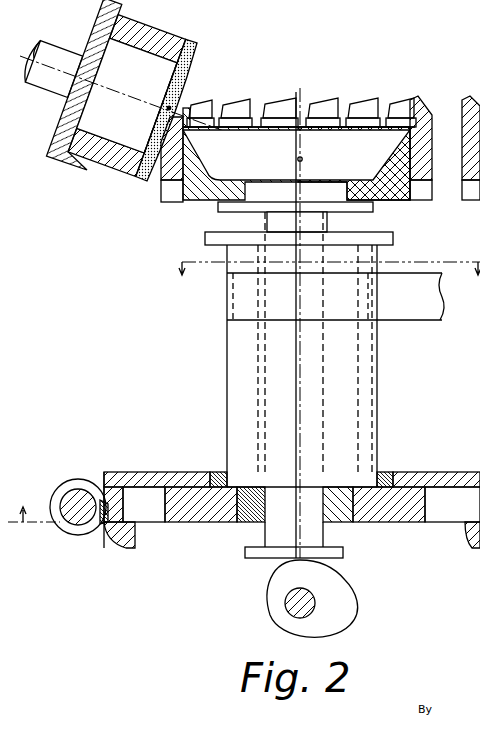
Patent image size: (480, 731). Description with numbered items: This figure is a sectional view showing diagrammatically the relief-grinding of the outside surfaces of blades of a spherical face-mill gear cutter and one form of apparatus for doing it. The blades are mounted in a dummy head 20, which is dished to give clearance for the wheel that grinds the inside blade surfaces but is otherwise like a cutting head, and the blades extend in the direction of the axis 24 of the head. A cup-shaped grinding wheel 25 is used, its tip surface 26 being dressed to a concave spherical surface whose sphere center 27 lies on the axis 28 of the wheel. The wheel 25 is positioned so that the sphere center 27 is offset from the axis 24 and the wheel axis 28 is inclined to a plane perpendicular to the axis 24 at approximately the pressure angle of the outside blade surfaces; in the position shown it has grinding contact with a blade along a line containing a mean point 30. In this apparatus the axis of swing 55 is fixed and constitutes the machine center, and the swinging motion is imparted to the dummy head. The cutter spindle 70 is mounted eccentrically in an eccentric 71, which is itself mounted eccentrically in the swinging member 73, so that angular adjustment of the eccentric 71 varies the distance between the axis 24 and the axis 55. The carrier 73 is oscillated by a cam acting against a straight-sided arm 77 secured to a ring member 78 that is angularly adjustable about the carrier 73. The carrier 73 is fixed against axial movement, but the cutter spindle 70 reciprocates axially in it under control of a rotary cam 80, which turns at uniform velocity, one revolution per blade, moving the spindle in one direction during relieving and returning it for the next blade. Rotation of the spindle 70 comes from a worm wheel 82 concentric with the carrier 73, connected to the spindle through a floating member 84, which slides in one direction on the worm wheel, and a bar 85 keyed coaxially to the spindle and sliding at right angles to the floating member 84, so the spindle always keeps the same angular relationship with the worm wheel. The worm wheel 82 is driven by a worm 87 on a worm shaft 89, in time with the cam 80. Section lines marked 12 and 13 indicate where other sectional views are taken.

The section line 12- 12 is at (34, 505).
The section line 13- 13 is at (326, 281).
The dummy head 20 is at (188, 200).
The axis of the dummy head 24 is at (295, 360).
The cup-shaped grinding wheel 25 is at (149, 31).
The tip surface 26 is at (197, 53).
The sphere center 27 is at (302, 158).
The axis of the wheel 28 is at (123, 93).
The mean point 30 is at (182, 108).
The axis of swing 55 is at (302, 377).
The cutter spindle 70 is at (264, 408).
The eccentric 71 is at (359, 390).
The swinging member 73 is at (372, 418).
The arm 77 is at (430, 318).
The ring member 78 is at (230, 300).
The rotary cam 80 is at (345, 593).
The worm wheel 82 is at (103, 523).
The floating member 84 is at (405, 520).
The bar 85 is at (340, 520).
The worm 87 is at (60, 520).
The worm shaft 89 is at (68, 497).